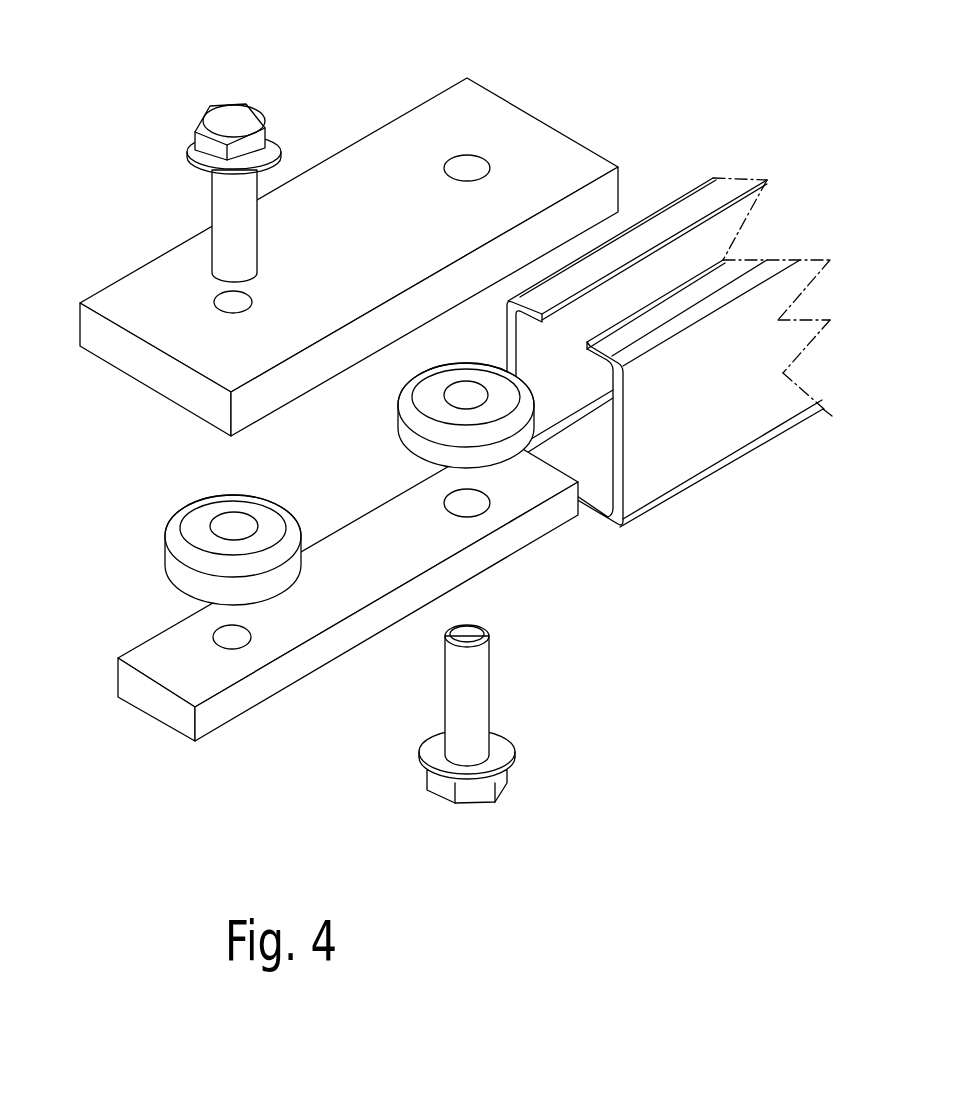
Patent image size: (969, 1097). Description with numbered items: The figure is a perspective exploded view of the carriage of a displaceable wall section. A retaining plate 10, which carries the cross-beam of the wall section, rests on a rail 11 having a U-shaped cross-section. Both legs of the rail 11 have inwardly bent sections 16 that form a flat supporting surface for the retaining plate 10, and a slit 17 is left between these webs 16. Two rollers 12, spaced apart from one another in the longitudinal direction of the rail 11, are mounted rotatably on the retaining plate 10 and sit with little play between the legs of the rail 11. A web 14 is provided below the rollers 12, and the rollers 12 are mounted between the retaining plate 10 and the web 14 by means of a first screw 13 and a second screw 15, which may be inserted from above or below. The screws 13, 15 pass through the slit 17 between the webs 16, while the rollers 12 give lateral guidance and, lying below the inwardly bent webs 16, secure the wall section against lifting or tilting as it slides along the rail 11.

The retaining plate 10 is at (555, 170).
The rail 11 is at (669, 310).
The rollers 12 is at (285, 575).
The first screw 13 is at (230, 125).
The web 14 is at (458, 563).
The second screw 15 is at (472, 793).
The inwardly bent sections 16 is at (692, 290).
The slit 17 is at (710, 243).